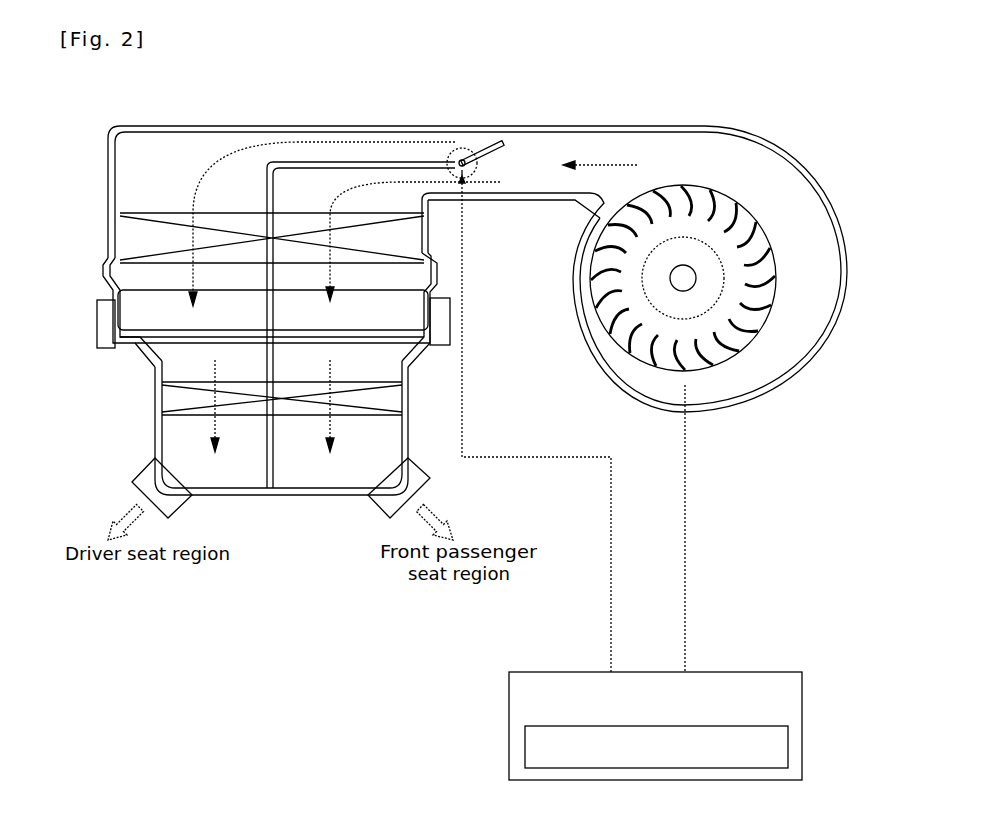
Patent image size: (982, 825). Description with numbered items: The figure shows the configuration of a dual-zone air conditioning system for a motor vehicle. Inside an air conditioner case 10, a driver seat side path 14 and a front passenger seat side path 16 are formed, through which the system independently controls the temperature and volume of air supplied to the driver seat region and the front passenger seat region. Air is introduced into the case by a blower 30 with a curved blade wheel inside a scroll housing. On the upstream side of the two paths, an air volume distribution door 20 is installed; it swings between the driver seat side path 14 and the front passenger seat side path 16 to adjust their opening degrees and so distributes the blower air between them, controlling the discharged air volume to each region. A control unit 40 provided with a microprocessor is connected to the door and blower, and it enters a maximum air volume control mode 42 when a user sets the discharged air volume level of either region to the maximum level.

The air conditioner case 10 is at (380, 127).
The driver seat side path 14 is at (202, 180).
The front passenger seat side path 16 is at (345, 201).
The air volume distribution door 20 is at (506, 147).
The blower 30 is at (717, 355).
The control unit 40 is at (802, 695).
The maximum air volume control mode 42 is at (788, 745).